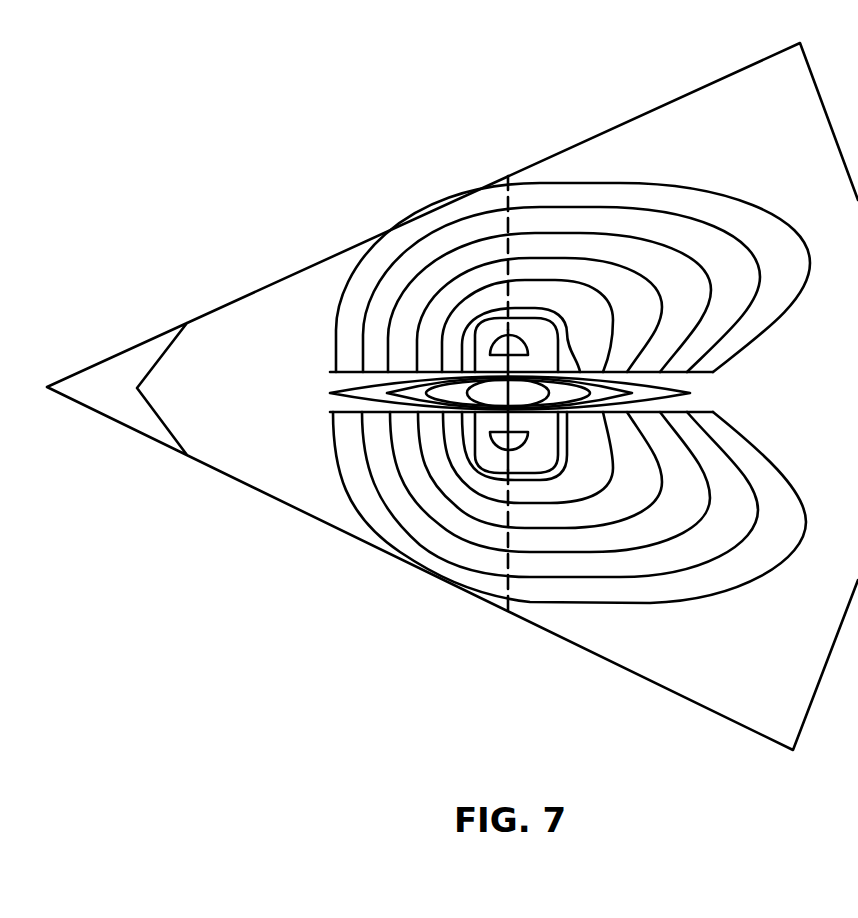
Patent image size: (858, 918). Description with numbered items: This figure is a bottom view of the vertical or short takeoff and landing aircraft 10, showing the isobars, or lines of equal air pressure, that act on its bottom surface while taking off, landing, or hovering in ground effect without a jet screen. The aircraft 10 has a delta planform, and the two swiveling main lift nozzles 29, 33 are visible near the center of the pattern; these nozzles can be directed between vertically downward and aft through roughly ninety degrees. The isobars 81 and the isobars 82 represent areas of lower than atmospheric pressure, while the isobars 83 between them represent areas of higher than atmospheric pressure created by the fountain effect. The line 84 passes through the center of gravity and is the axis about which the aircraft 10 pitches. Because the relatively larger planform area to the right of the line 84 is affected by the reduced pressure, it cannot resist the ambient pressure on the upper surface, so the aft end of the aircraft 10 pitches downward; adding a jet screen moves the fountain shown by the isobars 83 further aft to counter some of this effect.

The aircraft 10 is at (232, 300).
The right main lift nozzle 29 is at (487, 445).
The main lift nozzle 33 is at (490, 336).
The isobars 81 is at (630, 185).
The isobars 82 is at (658, 605).
The isobars 83 is at (340, 398).
The line 84 is at (505, 583).